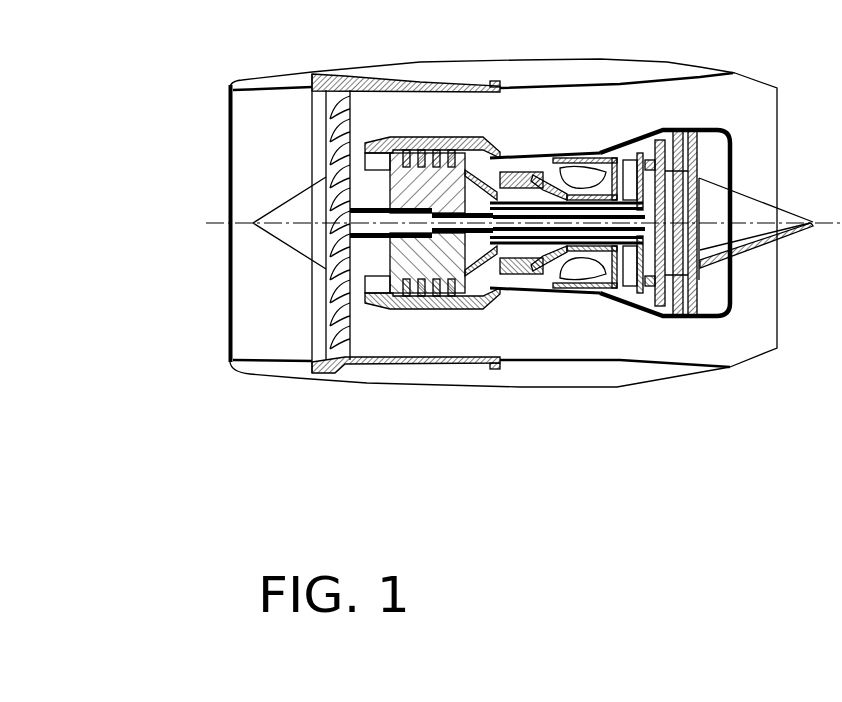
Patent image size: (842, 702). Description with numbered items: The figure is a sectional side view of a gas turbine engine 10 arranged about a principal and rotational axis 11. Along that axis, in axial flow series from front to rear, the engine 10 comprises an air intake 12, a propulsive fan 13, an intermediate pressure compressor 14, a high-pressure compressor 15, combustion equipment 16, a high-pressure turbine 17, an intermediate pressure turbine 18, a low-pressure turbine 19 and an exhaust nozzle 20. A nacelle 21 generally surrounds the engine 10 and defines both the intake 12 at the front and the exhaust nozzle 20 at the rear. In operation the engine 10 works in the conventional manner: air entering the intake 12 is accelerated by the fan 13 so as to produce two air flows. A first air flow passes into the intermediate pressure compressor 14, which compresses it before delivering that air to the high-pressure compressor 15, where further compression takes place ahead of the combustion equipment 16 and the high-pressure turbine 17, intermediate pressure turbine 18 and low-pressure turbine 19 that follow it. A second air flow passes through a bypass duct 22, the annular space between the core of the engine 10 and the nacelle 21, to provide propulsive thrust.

The gas turbine engine 10 is at (216, 122).
The principal and rotational axis 11 is at (222, 223).
The air intake 12 is at (282, 88).
The propulsive fan 13 is at (328, 330).
The intermediate pressure compressor 14 is at (427, 285).
The high-pressure compressor 15 is at (515, 177).
The combustion equipment 16 is at (577, 275).
The high-pressure turbine 17 is at (615, 280).
The intermediate pressure turbine 18 is at (640, 157).
The low-pressure turbine 19 is at (658, 298).
The exhaust nozzle 20 is at (778, 349).
The nacelle 21 is at (608, 62).
The bypass duct 22 is at (478, 127).